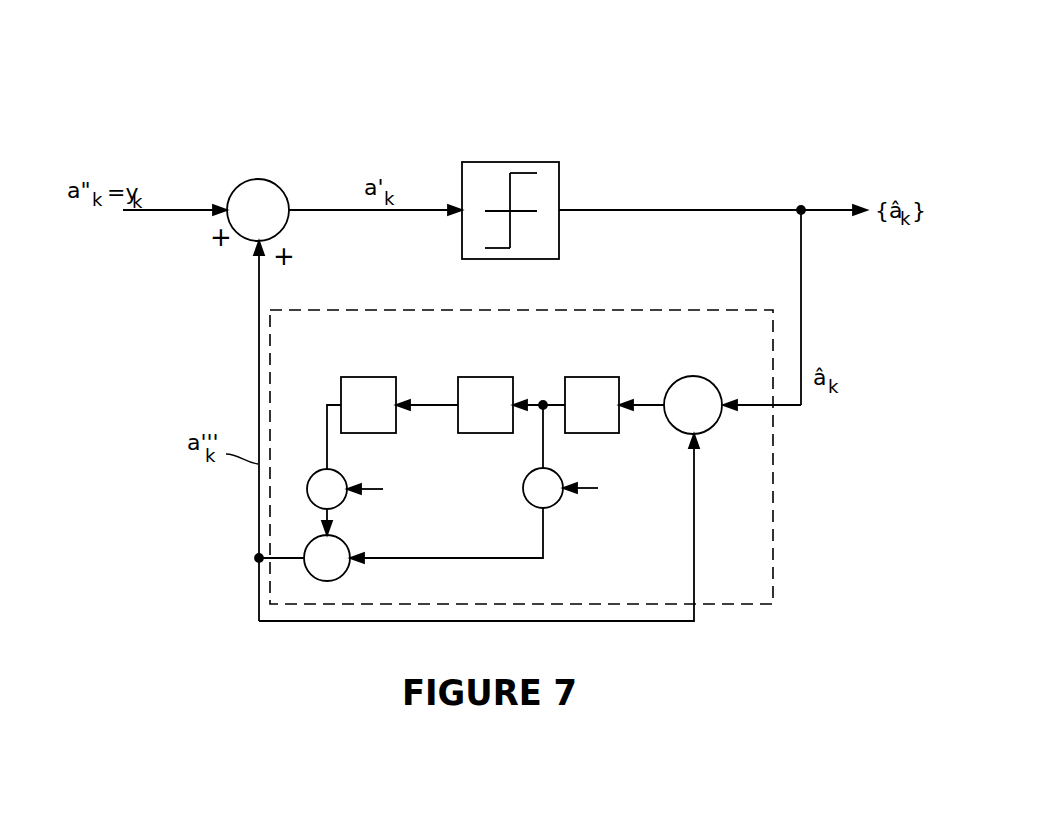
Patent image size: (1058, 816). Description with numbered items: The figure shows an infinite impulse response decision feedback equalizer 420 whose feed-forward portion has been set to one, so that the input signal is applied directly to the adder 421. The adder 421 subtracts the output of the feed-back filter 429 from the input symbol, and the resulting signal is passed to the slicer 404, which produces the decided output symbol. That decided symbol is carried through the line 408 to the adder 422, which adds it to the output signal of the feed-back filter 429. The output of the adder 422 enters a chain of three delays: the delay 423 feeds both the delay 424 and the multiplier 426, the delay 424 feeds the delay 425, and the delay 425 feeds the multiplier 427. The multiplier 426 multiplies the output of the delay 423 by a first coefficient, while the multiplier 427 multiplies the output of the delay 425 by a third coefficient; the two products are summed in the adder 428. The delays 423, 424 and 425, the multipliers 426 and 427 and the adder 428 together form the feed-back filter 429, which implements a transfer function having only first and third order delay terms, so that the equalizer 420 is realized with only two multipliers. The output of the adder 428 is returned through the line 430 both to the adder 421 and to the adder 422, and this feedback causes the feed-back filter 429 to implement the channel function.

The decision feedback equalizer 420 is at (351, 100).
The adder 421 is at (266, 180).
The slicer 404 is at (535, 160).
The line 408 is at (803, 336).
The feed-back filter 429 is at (640, 307).
The adder 422 is at (708, 378).
The delay 423 is at (598, 375).
The delay 424 is at (494, 375).
The delay 425 is at (371, 375).
The multiplier 426 is at (523, 489).
The multiplier 427 is at (311, 472).
The adder 428 is at (349, 571).
The line 430 is at (642, 623).